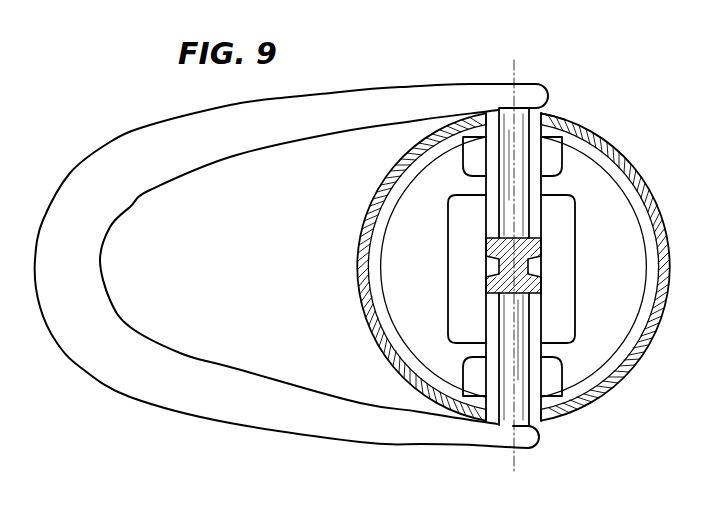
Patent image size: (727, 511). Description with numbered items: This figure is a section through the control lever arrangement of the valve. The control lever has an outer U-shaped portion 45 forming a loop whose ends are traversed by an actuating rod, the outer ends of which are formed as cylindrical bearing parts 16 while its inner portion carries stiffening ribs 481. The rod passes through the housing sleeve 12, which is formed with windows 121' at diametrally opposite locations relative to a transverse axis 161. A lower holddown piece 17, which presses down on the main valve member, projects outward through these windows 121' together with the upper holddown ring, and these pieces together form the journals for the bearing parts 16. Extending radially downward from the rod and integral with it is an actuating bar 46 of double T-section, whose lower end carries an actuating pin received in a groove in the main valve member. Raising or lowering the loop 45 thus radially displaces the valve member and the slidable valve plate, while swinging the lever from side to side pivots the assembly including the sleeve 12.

The outer U-shaped portion 45 is at (160, 135).
The housing sleeve 12 is at (358, 242).
The lower holddown piece 17 is at (607, 168).
The windows 121' is at (582, 106).
The stiffening ribs 481 is at (536, 157).
The cylindrical bearing parts 16 is at (533, 110).
The transverse axis 161 is at (519, 69).
The actuating bar 46 is at (487, 256).